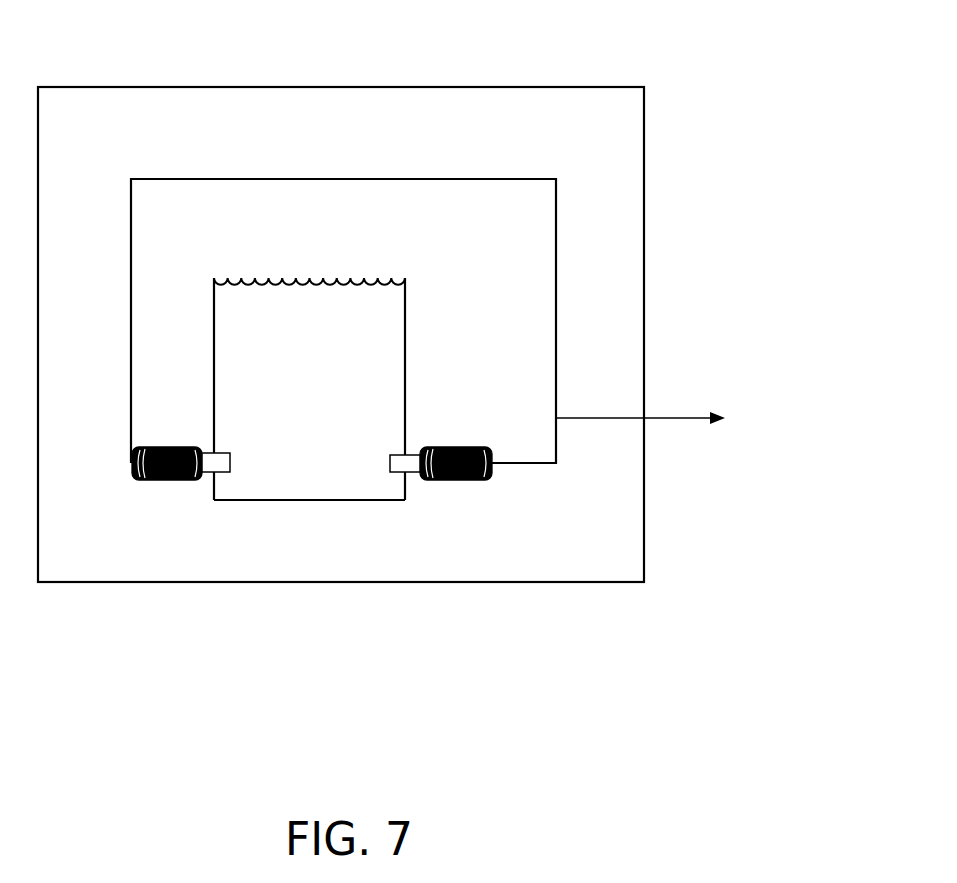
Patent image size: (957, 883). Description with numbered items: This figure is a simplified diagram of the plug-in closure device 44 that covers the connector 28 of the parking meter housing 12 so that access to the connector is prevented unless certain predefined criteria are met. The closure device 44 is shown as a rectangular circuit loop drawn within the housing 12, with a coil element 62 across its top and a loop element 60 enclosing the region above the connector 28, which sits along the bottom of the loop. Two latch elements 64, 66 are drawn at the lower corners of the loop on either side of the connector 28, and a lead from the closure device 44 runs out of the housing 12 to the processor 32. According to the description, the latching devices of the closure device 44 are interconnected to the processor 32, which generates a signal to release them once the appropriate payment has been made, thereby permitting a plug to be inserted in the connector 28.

The housing 12 is at (482, 80).
The plug-in closure device 44 is at (522, 383).
The processor 32 is at (680, 418).
The coil loop 60 is at (392, 368).
The inductor coil 62 is at (375, 280).
The connector 28 is at (310, 457).
The magnet 64 is at (203, 473).
The magnet 66 is at (408, 473).